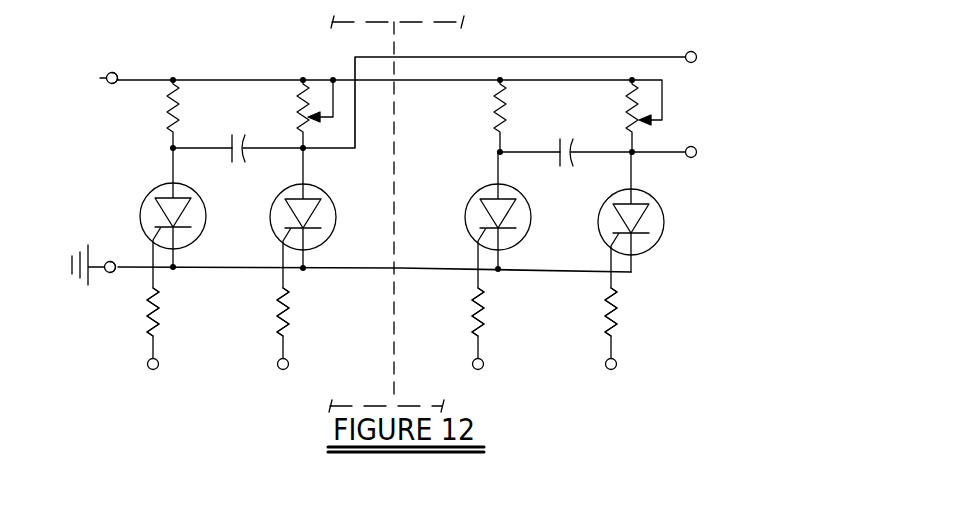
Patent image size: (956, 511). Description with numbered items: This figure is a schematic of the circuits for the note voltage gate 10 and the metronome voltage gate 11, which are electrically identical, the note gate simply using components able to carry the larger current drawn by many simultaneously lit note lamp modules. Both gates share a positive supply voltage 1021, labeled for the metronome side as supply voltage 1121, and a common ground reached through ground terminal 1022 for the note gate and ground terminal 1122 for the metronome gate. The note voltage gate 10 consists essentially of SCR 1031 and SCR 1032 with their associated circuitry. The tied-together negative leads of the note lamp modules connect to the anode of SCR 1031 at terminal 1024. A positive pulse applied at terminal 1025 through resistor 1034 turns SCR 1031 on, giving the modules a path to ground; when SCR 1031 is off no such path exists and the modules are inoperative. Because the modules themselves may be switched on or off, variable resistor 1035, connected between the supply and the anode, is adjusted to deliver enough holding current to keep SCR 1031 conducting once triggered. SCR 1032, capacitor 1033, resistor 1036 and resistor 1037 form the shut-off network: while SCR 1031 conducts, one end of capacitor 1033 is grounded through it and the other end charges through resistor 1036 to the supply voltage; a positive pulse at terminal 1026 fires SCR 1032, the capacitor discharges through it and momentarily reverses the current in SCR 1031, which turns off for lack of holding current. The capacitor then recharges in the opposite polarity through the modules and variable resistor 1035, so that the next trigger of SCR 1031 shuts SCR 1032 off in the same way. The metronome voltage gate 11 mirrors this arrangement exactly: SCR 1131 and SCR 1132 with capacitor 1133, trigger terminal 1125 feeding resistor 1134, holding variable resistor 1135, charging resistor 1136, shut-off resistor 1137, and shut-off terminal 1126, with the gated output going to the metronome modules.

The note voltage gate 10 is at (690, 278).
The metronome voltage gate 11 is at (95, 190).
The supply voltage 1021 is at (108, 85).
The supply voltage 1121 is at (70, 107).
The ground terminal 1122 is at (108, 273).
The ground terminal 1022 is at (73, 299).
The terminal 1024 is at (694, 158).
The terminal 1025 is at (617, 369).
The terminal 1026 is at (472, 368).
The SCR 1031 is at (608, 198).
The SCR 1032 is at (482, 192).
The capacitor 1033 is at (562, 152).
The resistor 1034 is at (598, 322).
The variable resistor 1035 is at (627, 118).
The resistor 1036 is at (494, 118).
The resistor 1037 is at (490, 316).
The terminal 1125 is at (278, 368).
The terminal 1126 is at (147, 368).
The SCR 1131 is at (320, 190).
The SCR 1132 is at (206, 232).
The capacitor 1133 is at (236, 152).
The resistor 1134 is at (292, 315).
The variable resistor 1135 is at (298, 113).
The resistor 1136 is at (178, 98).
The resistor 1137 is at (162, 313).